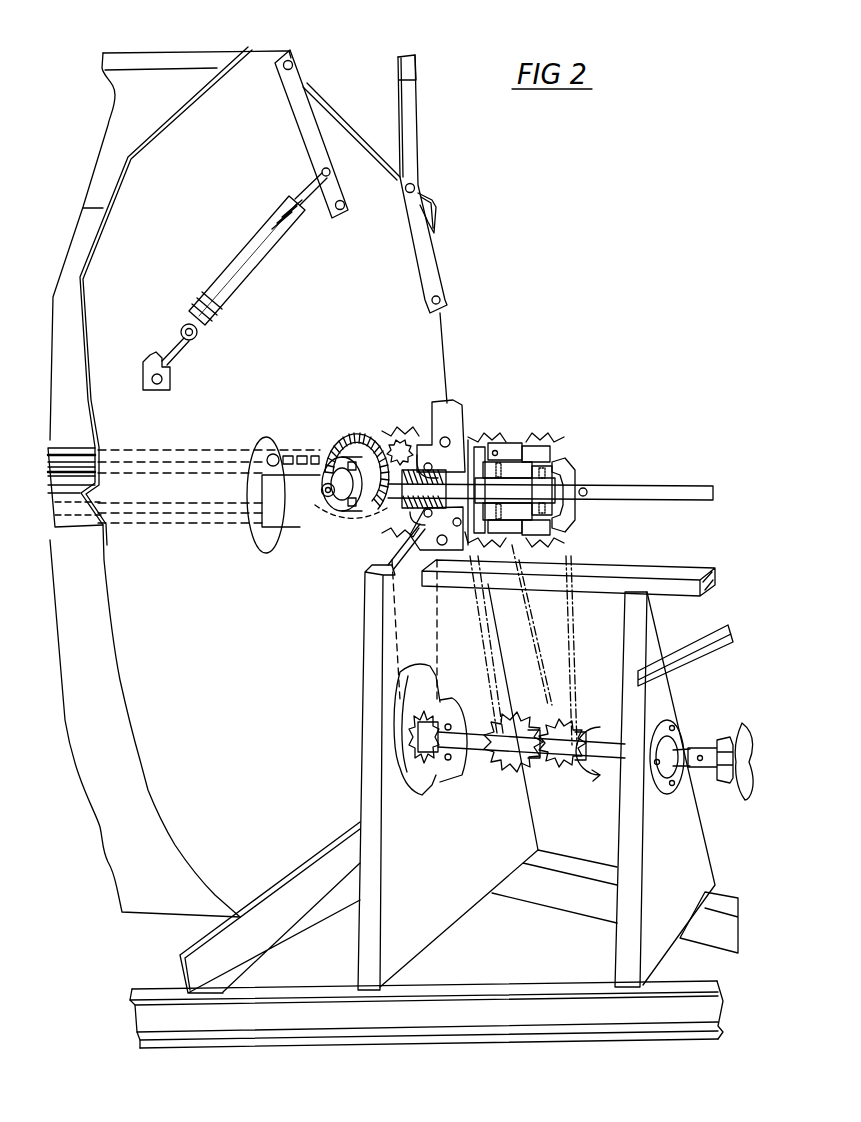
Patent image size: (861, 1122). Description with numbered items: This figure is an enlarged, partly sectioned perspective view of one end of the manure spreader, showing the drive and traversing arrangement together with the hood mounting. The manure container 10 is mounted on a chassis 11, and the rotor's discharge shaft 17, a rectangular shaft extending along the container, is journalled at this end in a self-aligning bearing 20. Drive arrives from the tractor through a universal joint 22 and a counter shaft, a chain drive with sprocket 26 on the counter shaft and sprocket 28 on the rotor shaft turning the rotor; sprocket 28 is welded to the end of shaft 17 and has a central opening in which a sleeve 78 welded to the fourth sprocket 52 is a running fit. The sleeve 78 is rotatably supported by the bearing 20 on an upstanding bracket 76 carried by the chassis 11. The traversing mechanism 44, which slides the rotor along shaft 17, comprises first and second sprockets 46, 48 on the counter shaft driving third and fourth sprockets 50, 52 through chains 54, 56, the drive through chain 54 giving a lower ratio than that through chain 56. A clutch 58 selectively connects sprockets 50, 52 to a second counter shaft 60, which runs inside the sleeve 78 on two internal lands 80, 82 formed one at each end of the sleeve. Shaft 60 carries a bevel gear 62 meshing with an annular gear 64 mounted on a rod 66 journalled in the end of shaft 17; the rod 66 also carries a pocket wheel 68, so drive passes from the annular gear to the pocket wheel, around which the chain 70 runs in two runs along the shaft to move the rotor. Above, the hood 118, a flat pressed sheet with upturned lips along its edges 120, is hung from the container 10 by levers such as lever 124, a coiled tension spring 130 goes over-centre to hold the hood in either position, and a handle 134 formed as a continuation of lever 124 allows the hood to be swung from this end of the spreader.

The manure container 10 is at (118, 763).
The chassis 11 is at (522, 1013).
The discharge shaft 17 is at (273, 502).
The self-aligning bearing 20 is at (407, 514).
The universal joint 22 is at (722, 742).
The sprocket 26 is at (413, 747).
The sprocket 28 is at (404, 432).
The traversing mechanism 44 is at (517, 433).
The first sprocket 46 is at (562, 767).
The second sprocket 48 is at (510, 760).
The third sprocket 50 is at (545, 452).
The fourth sprocket 52 is at (510, 433).
The chain 54 is at (567, 635).
The chain 56 is at (483, 643).
The clutch 58 is at (542, 430).
The second counter shaft 60 is at (545, 493).
The bevel gear 62 is at (350, 434).
The annular gear 64 is at (318, 437).
The rod 66 is at (327, 493).
The pocket wheel 68 is at (347, 490).
The chain 70 is at (287, 447).
The upstanding bracket 76 is at (393, 812).
The sleeve 78 is at (470, 540).
The internal land 80 is at (392, 455).
The internal land 82 is at (473, 480).
The hood 118 is at (145, 115).
The edges 120 is at (208, 58).
The lever 124 is at (430, 265).
The coiled tension spring 130 is at (188, 319).
The handle 134 is at (412, 68).